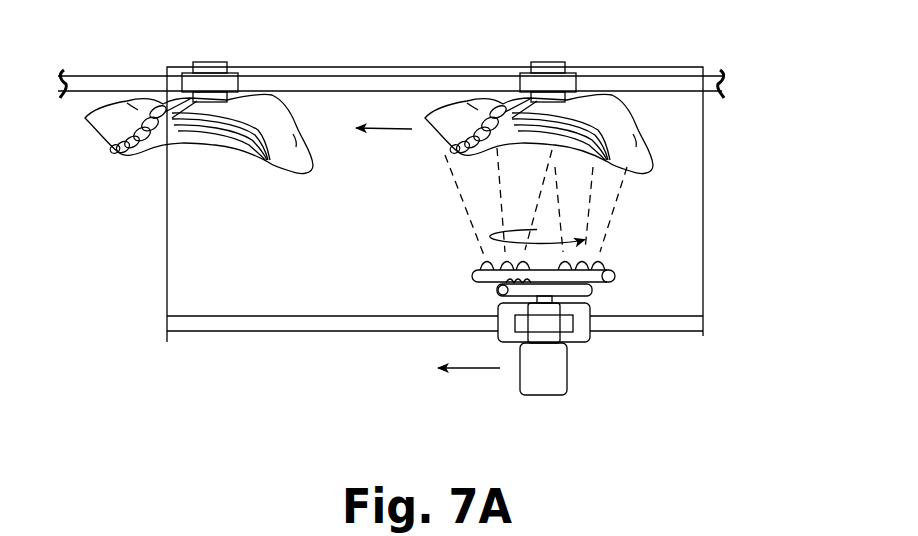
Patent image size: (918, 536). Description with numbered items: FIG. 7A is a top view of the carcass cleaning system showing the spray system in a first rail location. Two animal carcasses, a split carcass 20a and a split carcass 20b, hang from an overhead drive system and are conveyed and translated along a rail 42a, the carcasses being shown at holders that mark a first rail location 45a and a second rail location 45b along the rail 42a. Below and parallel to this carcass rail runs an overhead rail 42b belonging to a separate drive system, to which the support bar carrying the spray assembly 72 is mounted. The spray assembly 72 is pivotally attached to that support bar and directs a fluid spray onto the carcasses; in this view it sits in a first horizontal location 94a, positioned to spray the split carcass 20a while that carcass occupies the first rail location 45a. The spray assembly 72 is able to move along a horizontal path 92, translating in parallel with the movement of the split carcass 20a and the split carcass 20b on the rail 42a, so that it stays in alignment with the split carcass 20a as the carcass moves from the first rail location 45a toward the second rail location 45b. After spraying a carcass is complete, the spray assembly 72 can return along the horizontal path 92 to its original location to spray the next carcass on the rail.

The rail 42a is at (107, 76).
The overhead rail 42b is at (185, 332).
The first rail location 45a is at (570, 44).
The second rail location 45b is at (230, 38).
The split carcass 20a is at (664, 133).
The split carcass 20b is at (310, 118).
The horizontal path 92 is at (470, 369).
The spray assembly 72 is at (550, 406).
The first horizontal location 94a is at (585, 402).